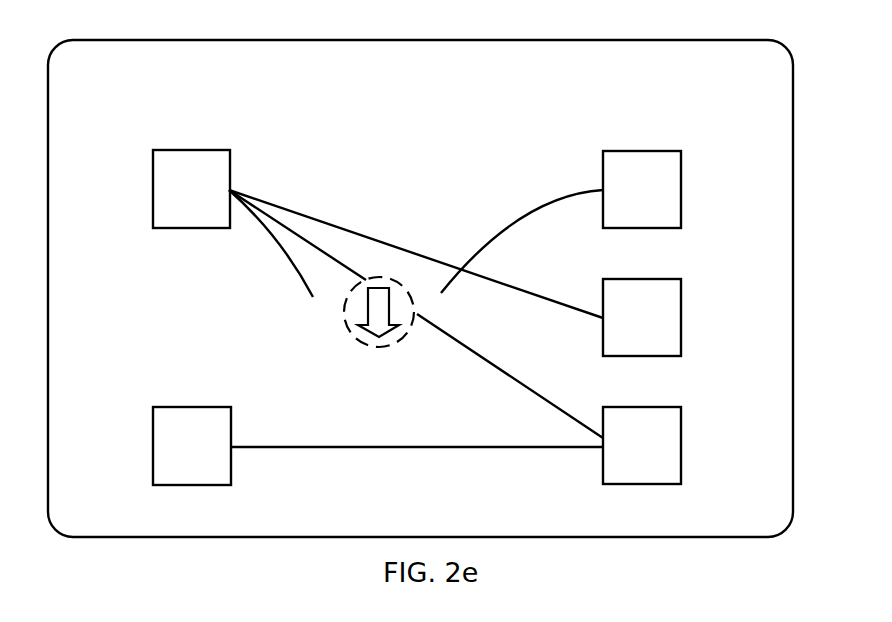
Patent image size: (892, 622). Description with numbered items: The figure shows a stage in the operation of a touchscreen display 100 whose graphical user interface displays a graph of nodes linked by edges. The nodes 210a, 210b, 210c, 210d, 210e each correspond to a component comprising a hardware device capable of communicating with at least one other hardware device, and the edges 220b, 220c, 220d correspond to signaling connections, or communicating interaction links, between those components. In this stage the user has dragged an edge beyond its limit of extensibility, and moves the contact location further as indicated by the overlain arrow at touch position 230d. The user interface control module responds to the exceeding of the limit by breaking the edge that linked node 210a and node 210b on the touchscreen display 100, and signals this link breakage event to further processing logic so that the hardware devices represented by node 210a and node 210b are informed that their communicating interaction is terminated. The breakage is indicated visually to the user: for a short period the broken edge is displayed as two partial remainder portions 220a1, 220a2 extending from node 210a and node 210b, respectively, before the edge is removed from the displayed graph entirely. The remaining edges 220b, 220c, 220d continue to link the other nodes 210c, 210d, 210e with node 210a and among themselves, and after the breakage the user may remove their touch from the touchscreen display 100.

The touchscreen display 100 is at (420, 40).
The node 210a is at (190, 150).
The node 210b is at (641, 151).
The node 210c is at (641, 279).
The node 210d is at (638, 407).
The node 210e is at (190, 407).
The partial remainder portion 220a1 is at (290, 256).
The partial remainder portion 220a2 is at (542, 200).
The edge 220b is at (505, 283).
The edge 220c is at (503, 373).
The edge 220d is at (293, 447).
The touch position 230d is at (343, 312).